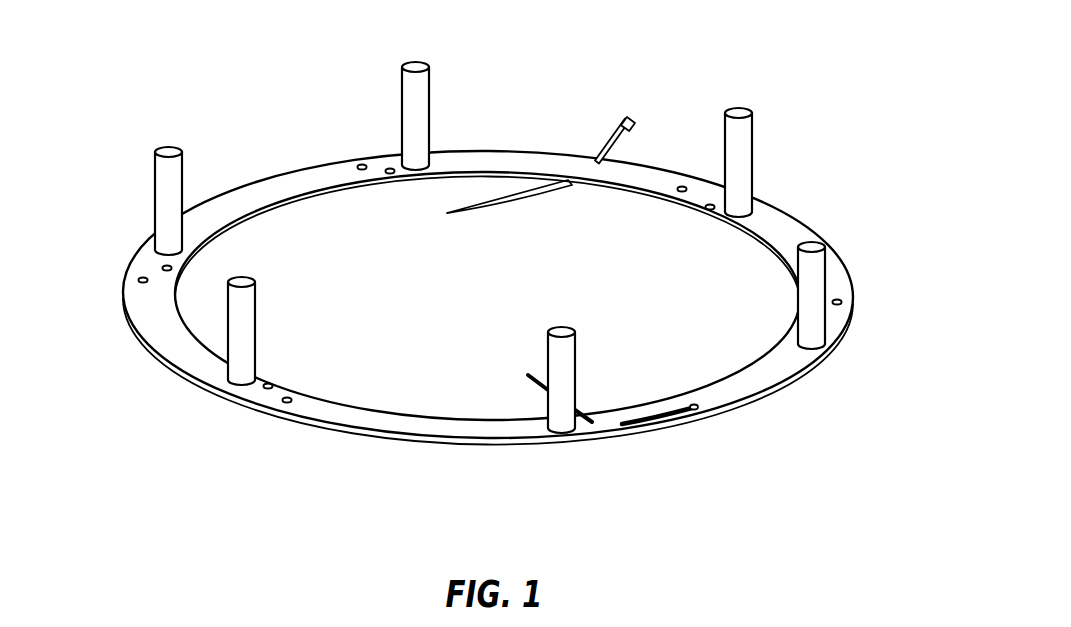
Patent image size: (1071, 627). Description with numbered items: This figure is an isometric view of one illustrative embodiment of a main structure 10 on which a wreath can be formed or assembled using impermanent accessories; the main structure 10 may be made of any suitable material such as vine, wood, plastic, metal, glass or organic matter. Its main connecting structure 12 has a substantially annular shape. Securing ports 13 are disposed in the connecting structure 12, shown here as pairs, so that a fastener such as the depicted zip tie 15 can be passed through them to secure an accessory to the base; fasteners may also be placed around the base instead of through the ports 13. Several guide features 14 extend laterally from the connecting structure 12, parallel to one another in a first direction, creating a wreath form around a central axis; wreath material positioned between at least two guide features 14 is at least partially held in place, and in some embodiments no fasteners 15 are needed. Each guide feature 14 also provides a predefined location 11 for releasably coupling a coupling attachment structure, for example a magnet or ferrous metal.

The main structure 10 is at (835, 84).
The predefined location 11 is at (152, 143).
The main connecting structure 12 is at (124, 297).
The securing ports 13 is at (710, 204).
The guide feature 14 is at (448, 113).
The zip tie 15 is at (627, 110).